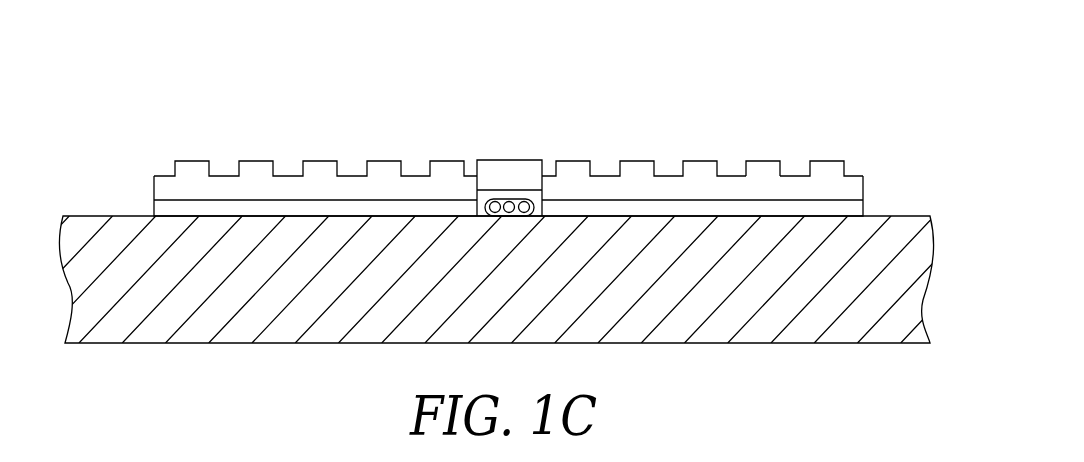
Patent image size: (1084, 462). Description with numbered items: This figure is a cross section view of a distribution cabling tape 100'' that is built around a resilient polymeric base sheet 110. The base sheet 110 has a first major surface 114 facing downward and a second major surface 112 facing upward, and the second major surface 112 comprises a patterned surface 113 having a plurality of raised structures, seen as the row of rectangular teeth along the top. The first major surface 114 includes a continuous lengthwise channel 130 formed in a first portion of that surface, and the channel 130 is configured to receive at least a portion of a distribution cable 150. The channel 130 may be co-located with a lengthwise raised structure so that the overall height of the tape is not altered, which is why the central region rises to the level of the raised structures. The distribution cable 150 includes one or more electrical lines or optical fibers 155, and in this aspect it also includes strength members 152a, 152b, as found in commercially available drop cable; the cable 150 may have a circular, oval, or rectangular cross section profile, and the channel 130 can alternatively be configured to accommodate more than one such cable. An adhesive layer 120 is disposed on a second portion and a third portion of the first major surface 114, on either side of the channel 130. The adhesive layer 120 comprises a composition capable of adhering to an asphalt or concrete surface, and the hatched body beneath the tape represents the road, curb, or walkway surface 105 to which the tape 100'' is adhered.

The distribution cabling tape 100'' is at (928, 99).
The road, curb, or walkway surface 105 is at (890, 322).
The resilient polymeric base sheet 110 is at (158, 175).
The second major surface 112 is at (856, 176).
The patterned surface 113 is at (764, 160).
The first major surface 114 is at (762, 202).
The adhesive layer 120 is at (855, 208).
The continuous lengthwise channel 130 is at (487, 217).
The distribution cable 150 is at (537, 207).
The strength member 152a is at (494, 201).
The strength member 152b is at (524, 201).
The electrical lines or optical fibers 155 is at (508, 201).